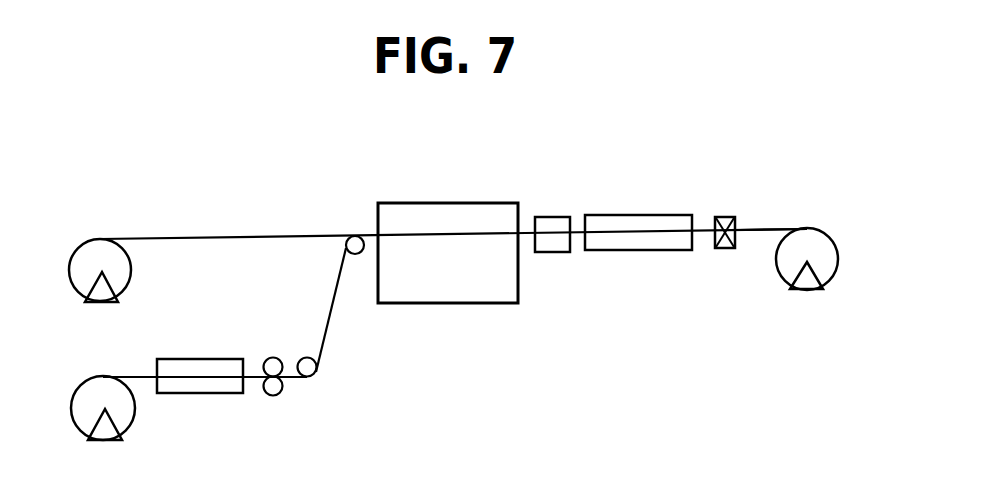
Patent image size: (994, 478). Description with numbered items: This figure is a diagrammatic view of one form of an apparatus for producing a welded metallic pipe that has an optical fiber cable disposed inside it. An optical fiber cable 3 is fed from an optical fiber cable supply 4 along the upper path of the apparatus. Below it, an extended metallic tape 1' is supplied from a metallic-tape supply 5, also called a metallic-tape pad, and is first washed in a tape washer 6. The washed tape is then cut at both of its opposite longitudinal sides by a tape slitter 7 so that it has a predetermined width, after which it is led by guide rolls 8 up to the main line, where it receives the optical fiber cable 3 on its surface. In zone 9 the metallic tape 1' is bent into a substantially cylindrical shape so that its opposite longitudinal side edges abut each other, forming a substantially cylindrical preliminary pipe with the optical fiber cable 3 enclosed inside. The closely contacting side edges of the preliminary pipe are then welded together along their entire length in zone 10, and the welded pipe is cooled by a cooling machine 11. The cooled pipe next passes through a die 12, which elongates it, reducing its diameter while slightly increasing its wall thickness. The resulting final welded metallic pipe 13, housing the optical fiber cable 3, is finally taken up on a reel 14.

The extended metallic tape 1' is at (224, 312).
The optical fiber cable 3 is at (250, 235).
The optical fiber cable supply 4 is at (90, 253).
The metallic-tape supply 5 is at (93, 398).
The tape washer 6 is at (197, 367).
The tape slitter 7 is at (268, 357).
The guide rolls 8 is at (301, 356).
The zone 9 is at (444, 212).
The zone 10 is at (549, 225).
The cooling machine 11 is at (627, 220).
The die 12 is at (725, 222).
The final welded metallic pipe 13 is at (758, 235).
The reel 14 is at (814, 243).